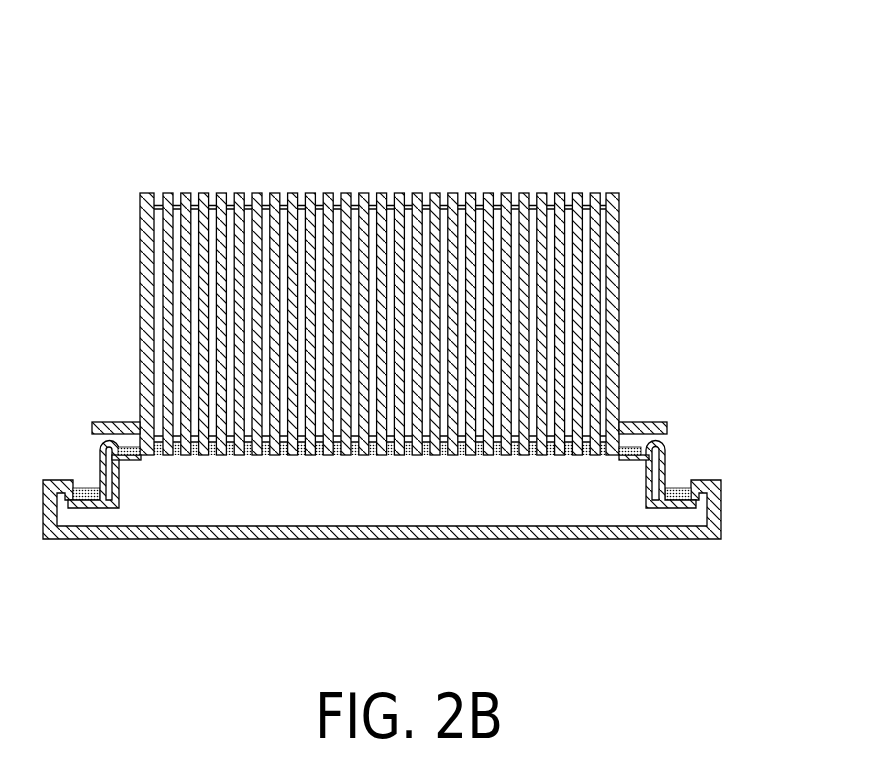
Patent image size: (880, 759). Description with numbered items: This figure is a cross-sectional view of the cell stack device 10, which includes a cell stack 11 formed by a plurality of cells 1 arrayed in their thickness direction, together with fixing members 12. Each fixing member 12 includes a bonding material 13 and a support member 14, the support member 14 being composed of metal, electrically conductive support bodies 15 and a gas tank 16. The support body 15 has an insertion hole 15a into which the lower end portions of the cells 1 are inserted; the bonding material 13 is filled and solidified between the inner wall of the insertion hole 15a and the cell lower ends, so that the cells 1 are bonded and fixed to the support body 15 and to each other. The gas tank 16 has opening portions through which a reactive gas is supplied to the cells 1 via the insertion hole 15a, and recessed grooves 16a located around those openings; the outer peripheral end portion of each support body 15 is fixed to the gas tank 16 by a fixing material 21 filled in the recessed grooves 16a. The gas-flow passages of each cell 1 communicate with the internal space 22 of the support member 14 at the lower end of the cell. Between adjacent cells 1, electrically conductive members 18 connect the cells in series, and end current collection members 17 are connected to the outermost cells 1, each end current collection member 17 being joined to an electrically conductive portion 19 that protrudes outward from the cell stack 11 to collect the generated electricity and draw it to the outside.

The cell 1 is at (434, 193).
The cell stack device 10 is at (684, 138).
The cell stack 11 is at (610, 108).
The fixing member 12 is at (764, 355).
The bonding material 13 is at (626, 458).
The support member 14 is at (782, 451).
The support body 15 is at (100, 446).
The insertion hole 15a is at (634, 470).
The gas tank 16 is at (721, 480).
The recessed groove 16a is at (377, 552).
The end current collection member 17 is at (144, 193).
The electrically conductive member 18 is at (304, 193).
The electrically conductive portion 19 is at (94, 423).
The fixing material 21 is at (92, 508).
The internal space 22 is at (392, 514).